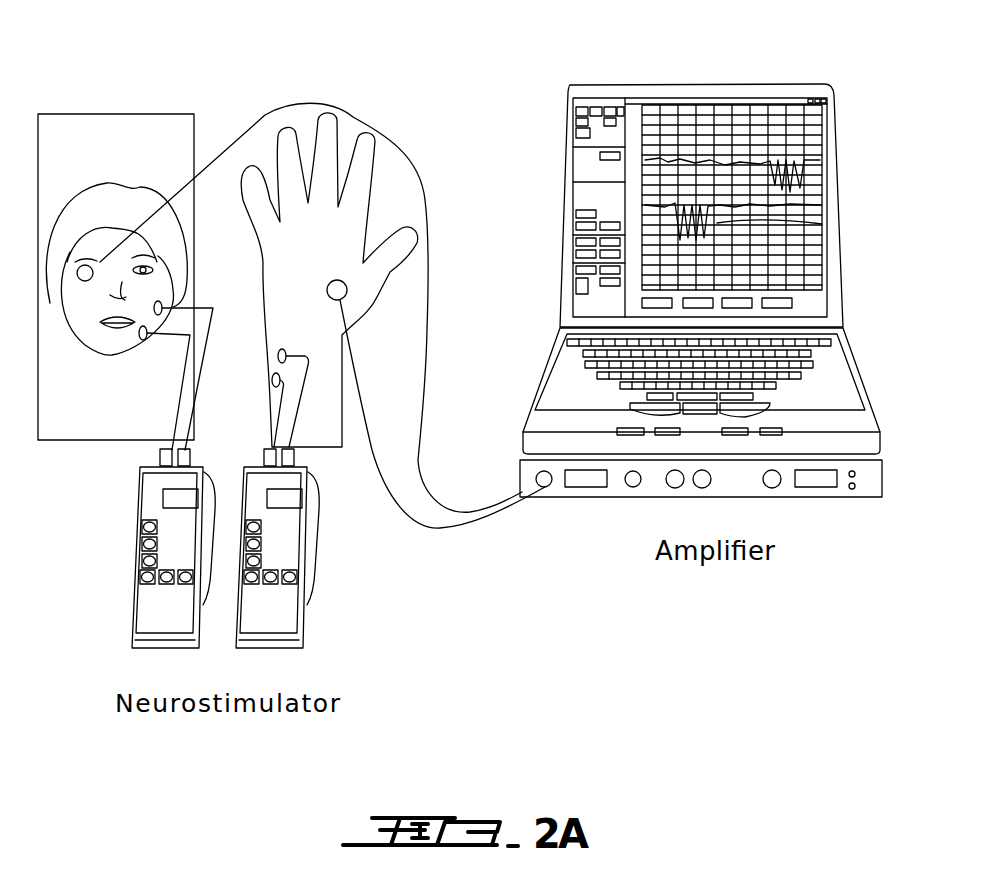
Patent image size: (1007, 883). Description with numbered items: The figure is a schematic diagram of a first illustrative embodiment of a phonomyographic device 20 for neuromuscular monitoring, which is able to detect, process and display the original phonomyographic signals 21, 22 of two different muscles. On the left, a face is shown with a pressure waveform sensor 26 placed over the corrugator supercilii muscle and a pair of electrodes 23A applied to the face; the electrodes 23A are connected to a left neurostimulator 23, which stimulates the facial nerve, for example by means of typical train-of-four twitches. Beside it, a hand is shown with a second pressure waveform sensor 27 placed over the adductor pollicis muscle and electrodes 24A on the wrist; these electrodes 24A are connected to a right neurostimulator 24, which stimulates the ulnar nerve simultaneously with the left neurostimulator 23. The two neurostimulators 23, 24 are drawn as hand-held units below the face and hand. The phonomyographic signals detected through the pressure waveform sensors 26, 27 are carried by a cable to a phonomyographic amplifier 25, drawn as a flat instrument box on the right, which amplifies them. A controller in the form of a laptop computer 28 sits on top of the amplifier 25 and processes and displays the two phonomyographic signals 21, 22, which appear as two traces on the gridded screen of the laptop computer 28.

The phonomyographic device 20 is at (442, 116).
The phonomyographic signal 21 is at (795, 160).
The phonomyographic signal 22 is at (718, 223).
The left neurostimulator 23 is at (136, 580).
The electrodes 23A is at (150, 328).
The right neurostimulator 24 is at (309, 582).
The electrodes 24A is at (275, 386).
The phonomyographic amplifier 25 is at (872, 497).
The pressure waveform sensor 26 is at (90, 262).
The pressure waveform sensor 27 is at (347, 290).
The laptop computer 28 is at (746, 83).